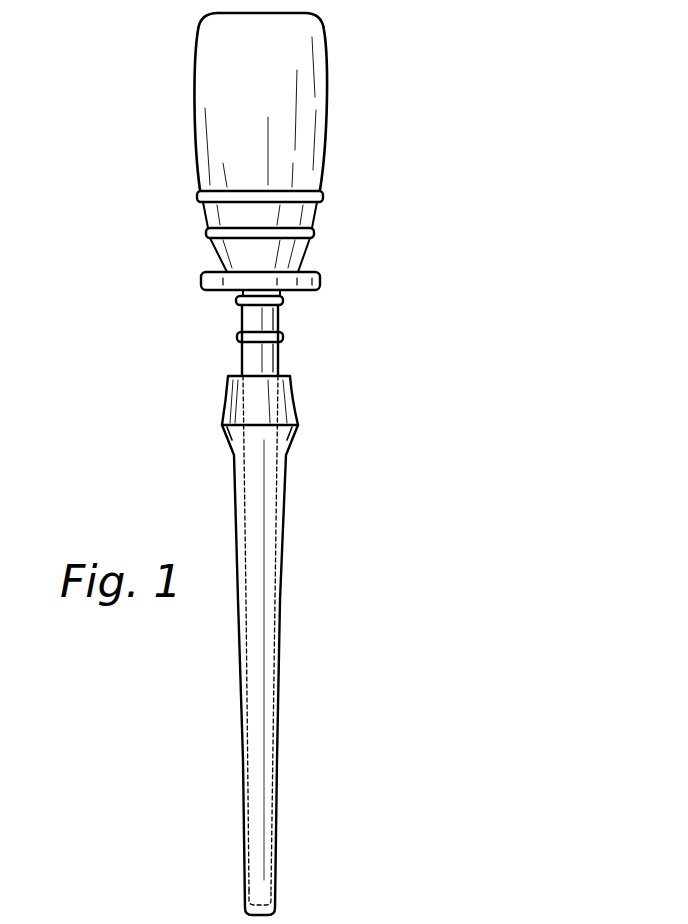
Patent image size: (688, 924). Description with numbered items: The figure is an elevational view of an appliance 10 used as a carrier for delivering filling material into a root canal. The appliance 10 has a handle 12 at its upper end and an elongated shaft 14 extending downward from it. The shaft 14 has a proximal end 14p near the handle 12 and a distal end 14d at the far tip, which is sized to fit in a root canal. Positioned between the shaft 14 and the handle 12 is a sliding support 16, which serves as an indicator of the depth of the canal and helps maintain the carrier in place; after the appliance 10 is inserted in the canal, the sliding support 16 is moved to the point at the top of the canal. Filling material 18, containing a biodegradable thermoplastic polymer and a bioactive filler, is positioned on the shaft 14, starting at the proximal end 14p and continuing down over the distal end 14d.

The appliance 10 is at (126, 96).
The handle 12 is at (290, 125).
The elongated shaft 14 is at (237, 360).
The proximal end 14p is at (268, 310).
The distal end 14d is at (258, 898).
The sliding support 16 is at (217, 287).
The filling material 18 is at (290, 437).